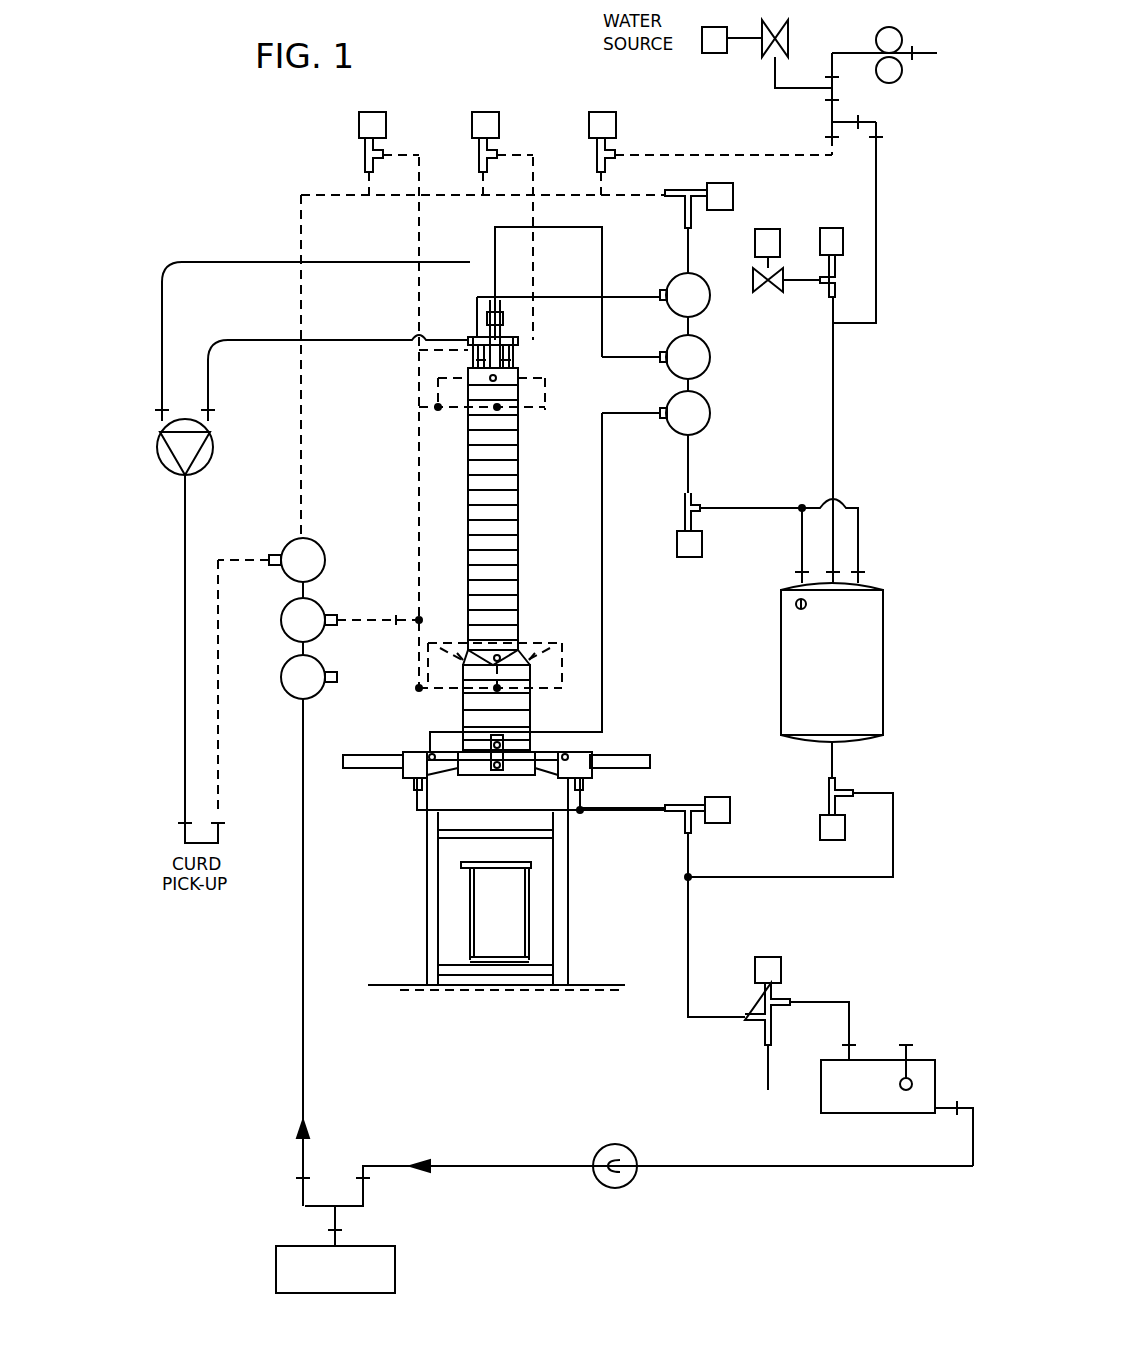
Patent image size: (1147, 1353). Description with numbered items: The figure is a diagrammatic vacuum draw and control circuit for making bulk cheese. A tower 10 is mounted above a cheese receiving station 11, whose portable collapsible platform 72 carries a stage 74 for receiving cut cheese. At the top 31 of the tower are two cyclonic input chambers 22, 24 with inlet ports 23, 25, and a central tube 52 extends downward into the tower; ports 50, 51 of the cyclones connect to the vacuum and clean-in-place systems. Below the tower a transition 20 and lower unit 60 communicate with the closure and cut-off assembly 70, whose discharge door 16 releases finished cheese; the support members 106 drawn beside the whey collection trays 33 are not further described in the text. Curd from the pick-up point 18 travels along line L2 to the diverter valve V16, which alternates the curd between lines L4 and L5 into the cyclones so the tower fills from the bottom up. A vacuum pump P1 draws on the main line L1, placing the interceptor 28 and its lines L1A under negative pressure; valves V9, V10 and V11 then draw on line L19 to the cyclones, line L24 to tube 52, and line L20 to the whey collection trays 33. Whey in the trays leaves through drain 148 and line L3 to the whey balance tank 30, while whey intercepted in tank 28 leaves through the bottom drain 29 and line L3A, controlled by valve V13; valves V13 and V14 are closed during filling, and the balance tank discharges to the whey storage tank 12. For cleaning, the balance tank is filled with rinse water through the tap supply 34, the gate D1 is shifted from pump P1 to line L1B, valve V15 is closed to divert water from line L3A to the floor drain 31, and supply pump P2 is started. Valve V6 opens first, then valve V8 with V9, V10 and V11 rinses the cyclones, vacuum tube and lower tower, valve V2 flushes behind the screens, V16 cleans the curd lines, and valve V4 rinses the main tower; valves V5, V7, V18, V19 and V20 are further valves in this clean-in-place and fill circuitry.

The vacuum pump P1 is at (902, 44).
The diverter or gate D1 is at (848, 133).
The main line L1 is at (876, 228).
The lines L1A is at (730, 508).
The line L1B is at (668, 157).
The valve V4 is at (372, 123).
The valve V5 is at (485, 123).
The valve V6 is at (603, 123).
The valve V7 is at (832, 236).
The valve V8 is at (720, 210).
The valve V9 is at (707, 305).
The valve V10 is at (710, 357).
The valve V11 is at (712, 410).
The valve V13 is at (820, 830).
The valve V14 is at (722, 800).
The valve V15 is at (772, 972).
The diverter valve V16 is at (212, 448).
The valve V18 is at (320, 668).
The valve V19 is at (320, 552).
The valve V2 is at (318, 612).
The valve V20 is at (688, 560).
The curd pick up line L2 is at (187, 532).
The drain line L3 is at (628, 808).
The line L3A is at (893, 865).
The line L4 is at (235, 340).
The line L5 is at (240, 262).
The vacuum line L19 is at (617, 298).
The vacuum line L20 is at (602, 542).
The vacuum line L24 is at (602, 236).
The tower 10 is at (521, 498).
The cheese receiving platform or station 11 is at (538, 913).
The whey storage tank 12 is at (385, 1270).
The closure discharge door 16 is at (527, 778).
The curd pick-up point 18 is at (183, 893).
The transition 20 is at (520, 650).
The cyclonic input chamber 22 is at (468, 352).
The inlet port 23 is at (472, 342).
The cyclonic input chamber 24 is at (522, 352).
The inlet port 25 is at (520, 340).
The interceptor 28 is at (883, 626).
The bottom drain 29 is at (832, 745).
The whey balance tank 30 is at (873, 1068).
The top 31 is at (765, 1045).
The whey collection trays 33 is at (410, 752).
The tap supply 34 is at (912, 1058).
The port 50 is at (480, 345).
The port 51 is at (510, 340).
The central tube 52 is at (492, 337).
The lower unit 60 is at (528, 720).
The closure and cut-off assembly 70 is at (392, 800).
The platform 72 is at (470, 918).
The stage 74 is at (490, 872).
The support beam 106 is at (352, 757).
The drain 148 is at (593, 783).
The supply pump P2 is at (625, 1183).